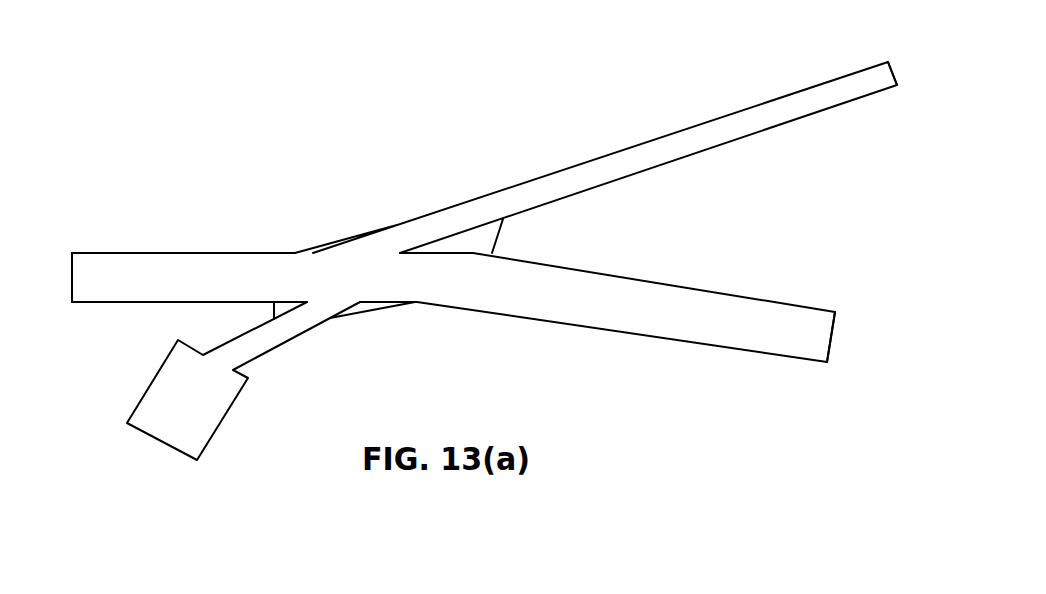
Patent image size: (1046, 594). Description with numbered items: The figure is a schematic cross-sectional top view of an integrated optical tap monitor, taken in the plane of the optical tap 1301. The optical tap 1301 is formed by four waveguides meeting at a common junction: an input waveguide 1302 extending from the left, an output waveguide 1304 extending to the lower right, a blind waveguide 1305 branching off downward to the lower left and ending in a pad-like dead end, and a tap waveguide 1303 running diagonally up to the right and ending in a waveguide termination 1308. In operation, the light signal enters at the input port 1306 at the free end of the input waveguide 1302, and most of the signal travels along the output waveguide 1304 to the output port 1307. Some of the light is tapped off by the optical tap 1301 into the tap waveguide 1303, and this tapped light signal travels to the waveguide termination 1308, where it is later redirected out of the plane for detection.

The optical tap 1301 is at (363, 159).
The input waveguide 1302 is at (242, 253).
The tap waveguide 1303 is at (585, 158).
The output waveguide 1304 is at (547, 322).
The blind waveguide 1305 is at (280, 345).
The input port 1306 is at (71, 263).
The output port 1307 is at (830, 348).
The waveguide termination 1308 is at (893, 73).